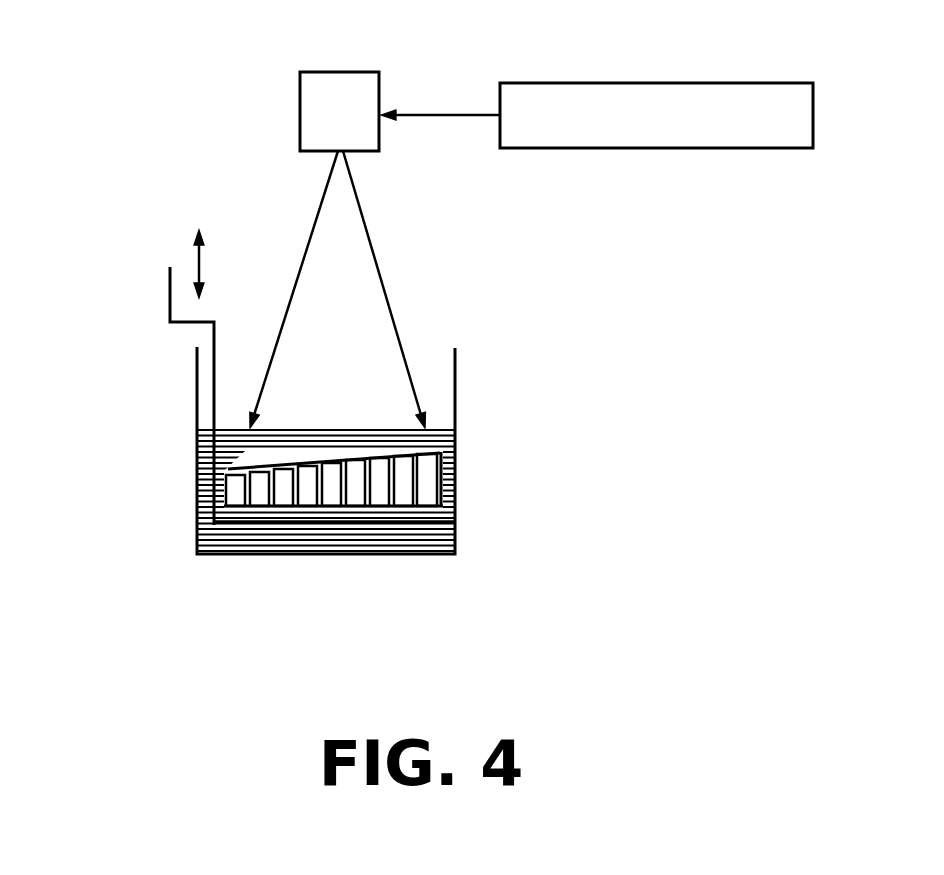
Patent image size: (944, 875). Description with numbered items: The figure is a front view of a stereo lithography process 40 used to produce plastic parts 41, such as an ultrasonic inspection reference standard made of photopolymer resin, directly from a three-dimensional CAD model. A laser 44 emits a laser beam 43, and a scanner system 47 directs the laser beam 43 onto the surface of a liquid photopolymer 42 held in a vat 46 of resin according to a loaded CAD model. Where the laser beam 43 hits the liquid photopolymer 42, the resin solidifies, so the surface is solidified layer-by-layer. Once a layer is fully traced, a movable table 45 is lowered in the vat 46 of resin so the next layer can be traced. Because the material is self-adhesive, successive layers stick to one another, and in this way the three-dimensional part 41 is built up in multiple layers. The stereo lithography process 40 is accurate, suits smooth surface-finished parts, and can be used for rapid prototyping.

The stereo lithography process 40 is at (600, 243).
The plastic part 41 is at (236, 460).
The liquid photopolymer 42 is at (393, 535).
The laser beam 43 is at (305, 258).
The laser 44 is at (733, 83).
The movable table 45 is at (168, 290).
The vat 46 is at (214, 521).
The scanner system 47 is at (328, 72).